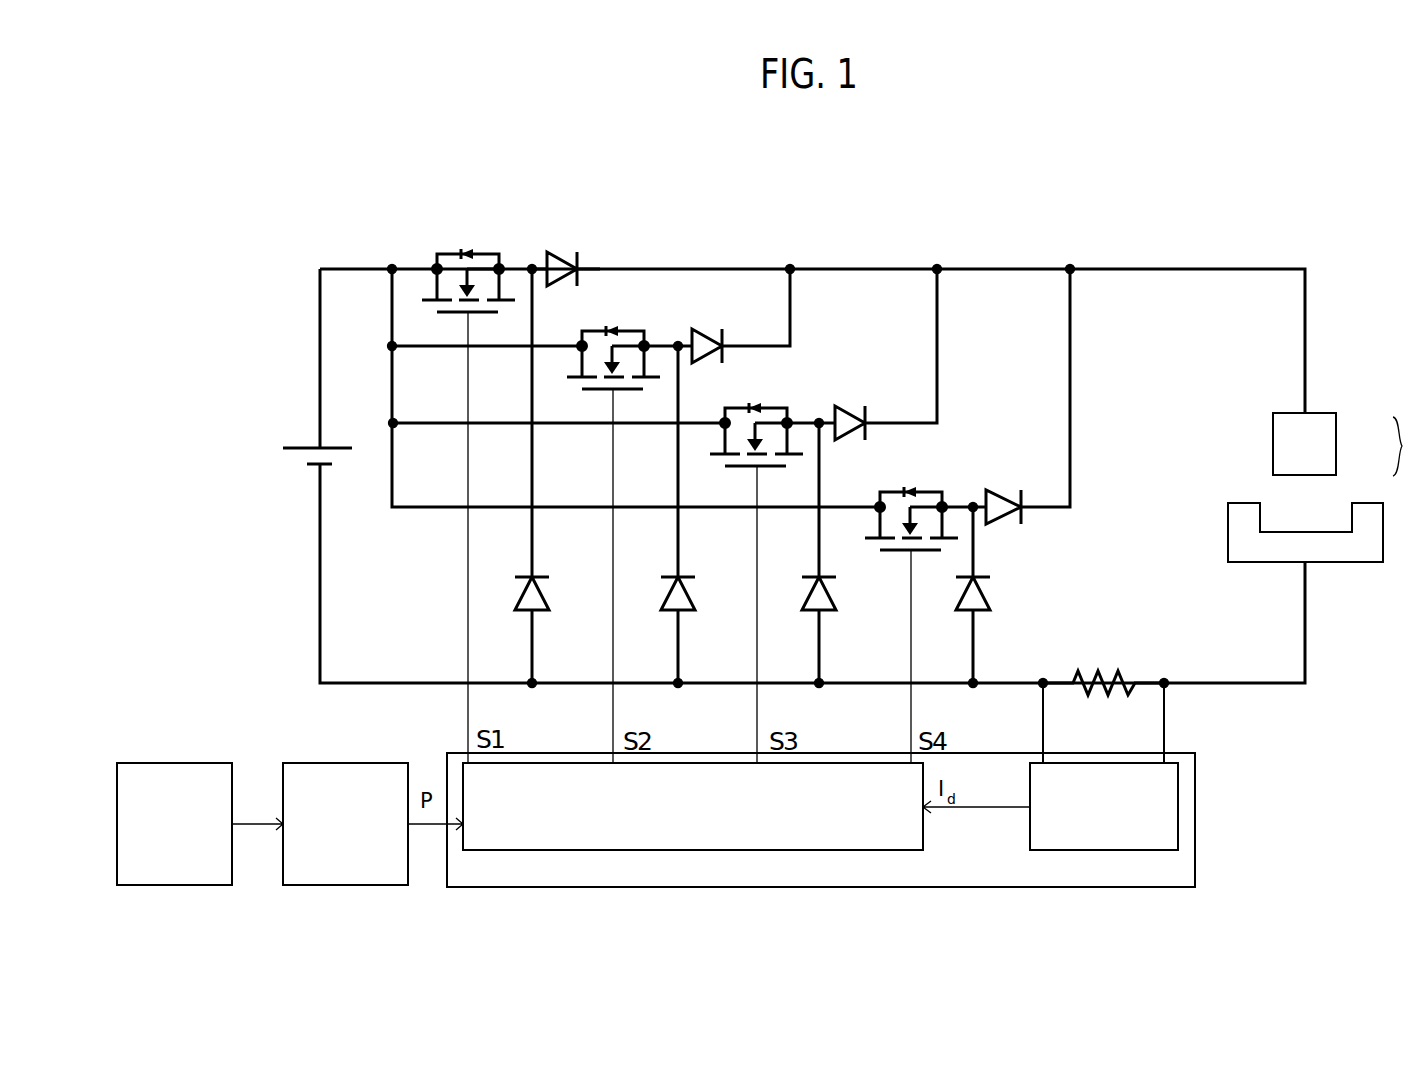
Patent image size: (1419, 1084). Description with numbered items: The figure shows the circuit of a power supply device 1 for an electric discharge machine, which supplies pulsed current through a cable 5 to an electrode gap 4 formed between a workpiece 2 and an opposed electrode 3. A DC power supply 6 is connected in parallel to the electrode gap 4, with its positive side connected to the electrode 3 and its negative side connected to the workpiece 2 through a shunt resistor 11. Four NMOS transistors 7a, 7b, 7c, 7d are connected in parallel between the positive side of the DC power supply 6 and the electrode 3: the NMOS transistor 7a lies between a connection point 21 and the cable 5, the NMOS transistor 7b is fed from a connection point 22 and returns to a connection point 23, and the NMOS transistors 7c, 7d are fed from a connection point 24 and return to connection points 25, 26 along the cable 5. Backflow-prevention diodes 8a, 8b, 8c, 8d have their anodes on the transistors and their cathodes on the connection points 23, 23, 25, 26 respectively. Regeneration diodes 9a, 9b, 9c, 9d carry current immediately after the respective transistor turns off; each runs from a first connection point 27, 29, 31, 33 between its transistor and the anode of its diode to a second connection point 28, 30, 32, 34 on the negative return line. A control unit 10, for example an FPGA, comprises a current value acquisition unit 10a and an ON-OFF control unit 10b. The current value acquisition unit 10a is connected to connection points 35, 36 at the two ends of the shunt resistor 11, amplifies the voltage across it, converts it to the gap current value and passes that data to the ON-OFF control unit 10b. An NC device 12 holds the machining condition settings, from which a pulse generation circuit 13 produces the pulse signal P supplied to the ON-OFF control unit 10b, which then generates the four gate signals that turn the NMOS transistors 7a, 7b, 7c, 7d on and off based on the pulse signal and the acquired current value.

The power supply device 1 is at (1004, 223).
The workpiece 2 is at (1358, 502).
The electrode 3 is at (1337, 448).
The electrode gap 4 is at (1405, 446).
The cable 5 is at (1220, 268).
The DC power supply 6 is at (300, 446).
The NMOS transistor 7a is at (447, 253).
The NMOS transistor 7b is at (612, 331).
The NMOS transistor 7c is at (766, 407).
The NMOS transistor 7d is at (921, 491).
The diode 8a is at (565, 254).
The diode 8b is at (715, 331).
The diode 8c is at (856, 409).
The diode 8d is at (1005, 493).
The diode 9a is at (540, 576).
The diode 9b is at (686, 576).
The diode 9c is at (826, 576).
The diode 9d is at (982, 576).
The control unit 10 is at (1196, 794).
The current value acquisition unit 10a is at (1030, 795).
The ON-OFF control unit 10b is at (923, 837).
The shunt resistor 11 is at (1105, 666).
The NC device 12 is at (193, 886).
The pulse generation circuit 13 is at (373, 886).
The connection point 21 is at (392, 268).
The connection point 22 is at (392, 345).
The connection point 23 is at (791, 266).
The connection point 24 is at (393, 422).
The connection point 25 is at (938, 266).
The connection point 26 is at (1071, 266).
The connection point 27 is at (533, 266).
The connection point 28 is at (534, 687).
The connection point 29 is at (679, 344).
The connection point 30 is at (680, 687).
The connection point 31 is at (819, 421).
The connection point 32 is at (821, 687).
The connection point 33 is at (974, 505).
The connection point 34 is at (975, 687).
The connection point 35 is at (1044, 680).
The connection point 36 is at (1165, 680).